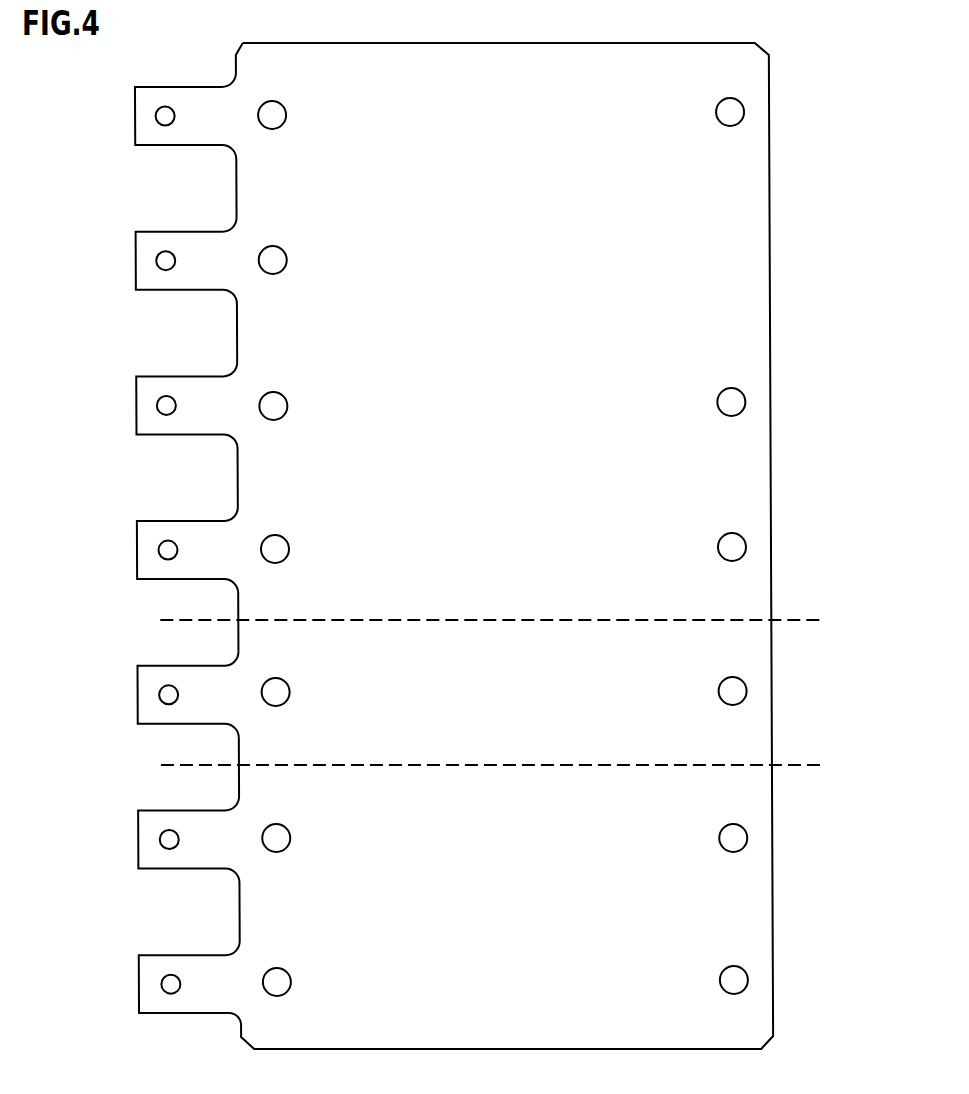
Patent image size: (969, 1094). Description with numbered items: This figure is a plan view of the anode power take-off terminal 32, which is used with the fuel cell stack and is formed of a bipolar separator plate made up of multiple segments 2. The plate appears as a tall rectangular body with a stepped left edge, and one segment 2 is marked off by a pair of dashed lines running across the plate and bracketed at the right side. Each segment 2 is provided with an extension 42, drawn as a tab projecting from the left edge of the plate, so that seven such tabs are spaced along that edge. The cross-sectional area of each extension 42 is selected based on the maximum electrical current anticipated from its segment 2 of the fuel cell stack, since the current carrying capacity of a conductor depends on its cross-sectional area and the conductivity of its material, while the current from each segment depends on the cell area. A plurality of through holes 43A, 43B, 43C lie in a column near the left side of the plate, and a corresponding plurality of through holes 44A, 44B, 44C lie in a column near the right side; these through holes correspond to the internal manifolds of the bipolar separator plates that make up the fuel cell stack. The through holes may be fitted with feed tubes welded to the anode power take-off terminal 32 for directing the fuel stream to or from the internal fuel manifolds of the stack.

The anode power take-off terminal 32 is at (782, 145).
The extension 42 is at (136, 712).
The through hole 43A is at (259, 122).
The through hole 43B is at (259, 267).
The through hole 43C is at (259, 413).
The through hole 44A is at (744, 257).
The through hole 44B is at (744, 400).
The through hole 44C is at (745, 545).
The segment 2 is at (820, 620).